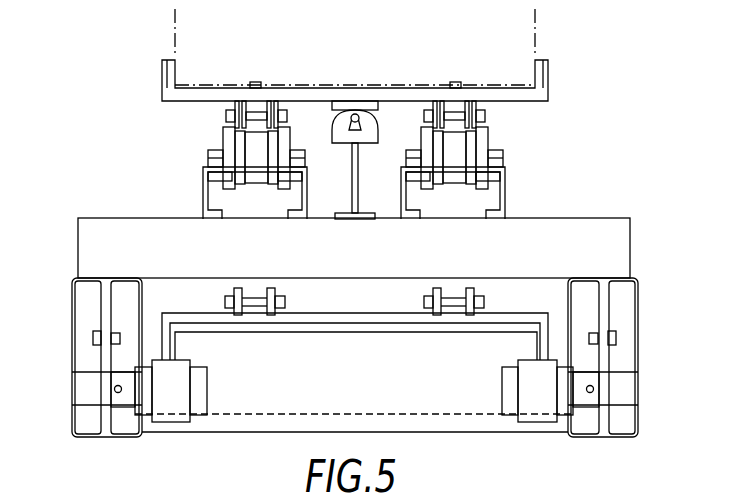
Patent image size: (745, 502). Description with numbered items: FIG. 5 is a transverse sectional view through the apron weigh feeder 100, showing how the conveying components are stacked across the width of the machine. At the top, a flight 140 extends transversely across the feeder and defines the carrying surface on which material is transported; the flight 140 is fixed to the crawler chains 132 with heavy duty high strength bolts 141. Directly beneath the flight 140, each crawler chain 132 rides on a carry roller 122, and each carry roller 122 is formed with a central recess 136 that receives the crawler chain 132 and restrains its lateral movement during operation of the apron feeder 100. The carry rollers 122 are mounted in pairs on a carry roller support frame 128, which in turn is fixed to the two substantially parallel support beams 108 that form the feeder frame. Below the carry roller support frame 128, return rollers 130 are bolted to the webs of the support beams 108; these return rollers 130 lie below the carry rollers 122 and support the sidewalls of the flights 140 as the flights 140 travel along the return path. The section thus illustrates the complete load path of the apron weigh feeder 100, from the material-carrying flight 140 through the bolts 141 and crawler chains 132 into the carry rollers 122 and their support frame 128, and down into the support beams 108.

The apron weigh feeder 100 is at (103, 119).
The support beams 108 is at (72, 330).
The carry rollers 122 is at (222, 127).
The carry roller support frames 128 is at (78, 241).
The return rollers 130 is at (190, 391).
The crawler chains 132 is at (226, 116).
The central recess 136 is at (238, 183).
The flights 140 is at (162, 75).
The bolts 141 is at (255, 80).